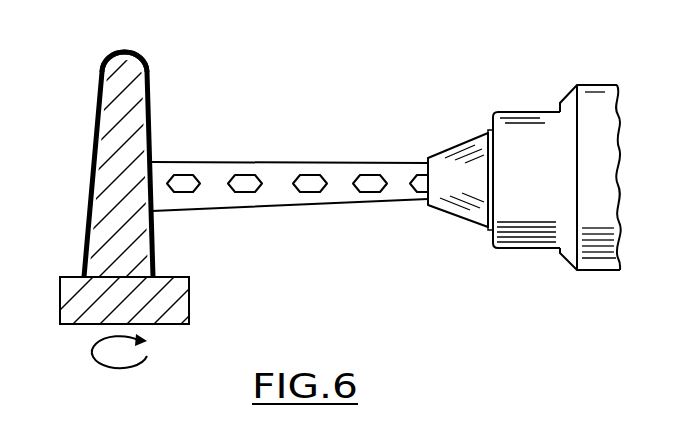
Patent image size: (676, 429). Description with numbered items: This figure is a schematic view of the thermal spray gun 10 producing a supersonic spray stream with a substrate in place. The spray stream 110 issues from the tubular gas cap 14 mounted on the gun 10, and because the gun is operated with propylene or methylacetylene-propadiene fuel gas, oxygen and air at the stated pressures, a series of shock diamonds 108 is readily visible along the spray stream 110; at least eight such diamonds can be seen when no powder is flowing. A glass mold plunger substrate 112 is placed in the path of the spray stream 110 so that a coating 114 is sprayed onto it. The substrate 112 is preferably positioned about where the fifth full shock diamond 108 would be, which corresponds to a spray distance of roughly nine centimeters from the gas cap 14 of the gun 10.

The thermal spray gun 10 is at (514, 58).
The gas cap 14 is at (458, 146).
The shock diamonds 108 is at (368, 183).
The spray stream 110 is at (300, 205).
The glass mold plunger substrate 112 is at (118, 128).
The coating 114 is at (148, 74).